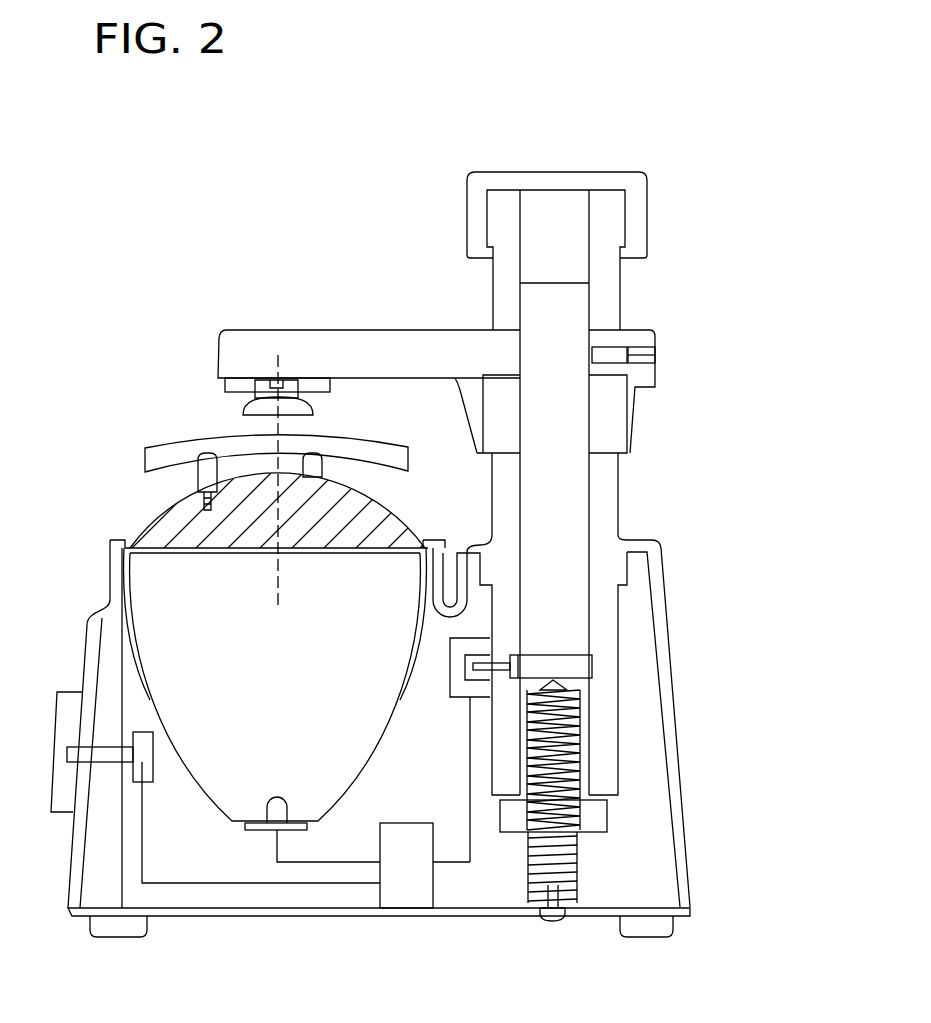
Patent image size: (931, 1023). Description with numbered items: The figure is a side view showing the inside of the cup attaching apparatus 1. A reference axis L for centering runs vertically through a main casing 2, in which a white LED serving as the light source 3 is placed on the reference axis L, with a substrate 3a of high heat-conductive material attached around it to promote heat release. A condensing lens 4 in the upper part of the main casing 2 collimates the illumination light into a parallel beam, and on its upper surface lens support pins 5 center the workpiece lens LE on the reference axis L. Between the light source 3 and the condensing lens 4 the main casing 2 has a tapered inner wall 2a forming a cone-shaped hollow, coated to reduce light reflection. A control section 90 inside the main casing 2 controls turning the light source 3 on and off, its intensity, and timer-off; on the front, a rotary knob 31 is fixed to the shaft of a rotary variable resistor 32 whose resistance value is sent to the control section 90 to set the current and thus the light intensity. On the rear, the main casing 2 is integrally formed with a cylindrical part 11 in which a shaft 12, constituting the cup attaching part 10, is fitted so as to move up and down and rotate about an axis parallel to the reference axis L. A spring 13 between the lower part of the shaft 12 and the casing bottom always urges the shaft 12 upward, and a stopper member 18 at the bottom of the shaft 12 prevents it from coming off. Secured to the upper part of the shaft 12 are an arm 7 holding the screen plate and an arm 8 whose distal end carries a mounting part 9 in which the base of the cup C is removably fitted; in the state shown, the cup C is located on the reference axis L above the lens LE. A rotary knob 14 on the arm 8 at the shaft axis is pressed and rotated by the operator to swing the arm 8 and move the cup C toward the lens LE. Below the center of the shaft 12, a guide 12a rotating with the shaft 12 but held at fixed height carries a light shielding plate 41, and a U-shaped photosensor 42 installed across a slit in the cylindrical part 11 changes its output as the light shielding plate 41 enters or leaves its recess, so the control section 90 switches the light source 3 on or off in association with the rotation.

The cup attaching apparatus 1 is at (92, 175).
The cup attaching part 10 is at (335, 213).
The rotary knob 14 is at (603, 172).
The shaft 12 is at (570, 413).
The guide 12a is at (575, 667).
The cylindrical part 11 is at (608, 505).
The arm 7 is at (643, 372).
The arm 8 is at (292, 330).
The mounting part 9 is at (237, 390).
The cup C is at (255, 408).
The reference axis L is at (280, 425).
The lens LE is at (172, 443).
The lens support pins 5 is at (200, 470).
The condensing lens 4 is at (130, 533).
The main casing 2 is at (88, 622).
The tapered inner wall 2a is at (135, 590).
The rotary knob 31 is at (63, 800).
The rotary variable resistor 32 is at (147, 750).
The light source 3 is at (280, 803).
The substrate 3a is at (247, 826).
The control section 90 is at (405, 890).
The light shielding plate 41 is at (452, 672).
The photosensor 42 is at (460, 690).
The spring 13 is at (577, 730).
The stopper member 18 is at (597, 817).